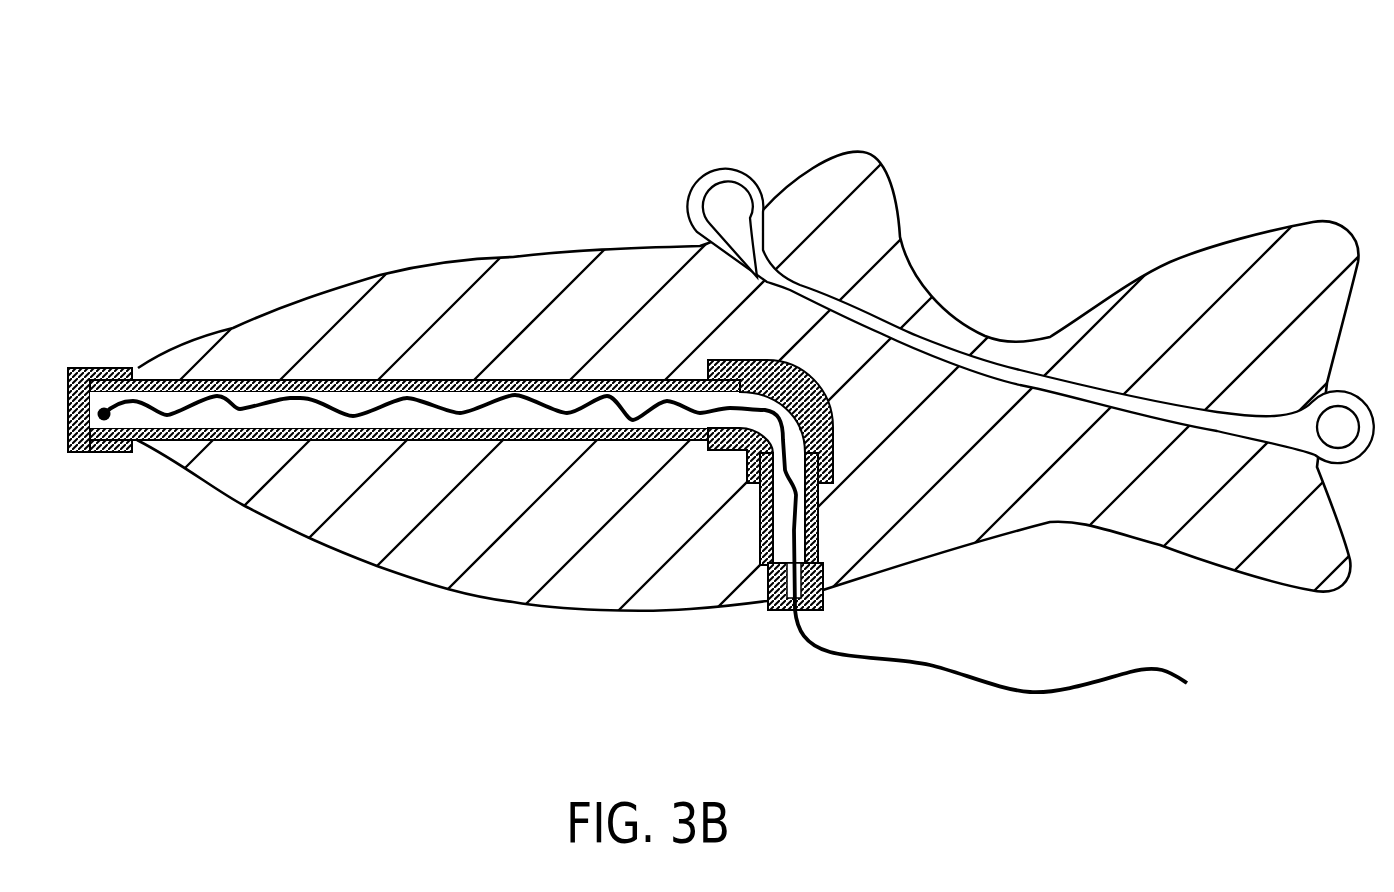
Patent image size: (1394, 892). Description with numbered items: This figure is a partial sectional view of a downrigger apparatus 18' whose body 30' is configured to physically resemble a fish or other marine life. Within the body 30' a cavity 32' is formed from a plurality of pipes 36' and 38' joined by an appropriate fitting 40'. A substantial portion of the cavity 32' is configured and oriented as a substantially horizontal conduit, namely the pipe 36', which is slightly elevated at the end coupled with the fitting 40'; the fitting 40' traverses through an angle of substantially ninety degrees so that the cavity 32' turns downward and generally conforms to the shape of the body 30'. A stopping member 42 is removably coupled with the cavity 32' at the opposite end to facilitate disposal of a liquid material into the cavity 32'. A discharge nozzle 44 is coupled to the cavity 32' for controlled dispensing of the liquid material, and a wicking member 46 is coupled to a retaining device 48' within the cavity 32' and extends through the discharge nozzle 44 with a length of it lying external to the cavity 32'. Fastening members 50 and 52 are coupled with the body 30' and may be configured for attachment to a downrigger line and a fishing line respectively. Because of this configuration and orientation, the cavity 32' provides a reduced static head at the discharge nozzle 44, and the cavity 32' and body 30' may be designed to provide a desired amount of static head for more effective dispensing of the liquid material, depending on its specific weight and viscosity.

The downrigger apparatus 18' is at (697, 382).
The body 30' is at (697, 420).
The cavity 32' is at (447, 395).
The pipe 36' is at (415, 325).
The pipe 38' is at (841, 499).
The fitting 40' is at (689, 576).
The stopping member 42 is at (98, 366).
The discharge nozzle 44 is at (777, 610).
The wicking member 46 is at (918, 668).
The retaining device 48' is at (119, 501).
The fastening member 50 is at (714, 170).
The fastening member 52 is at (1340, 390).